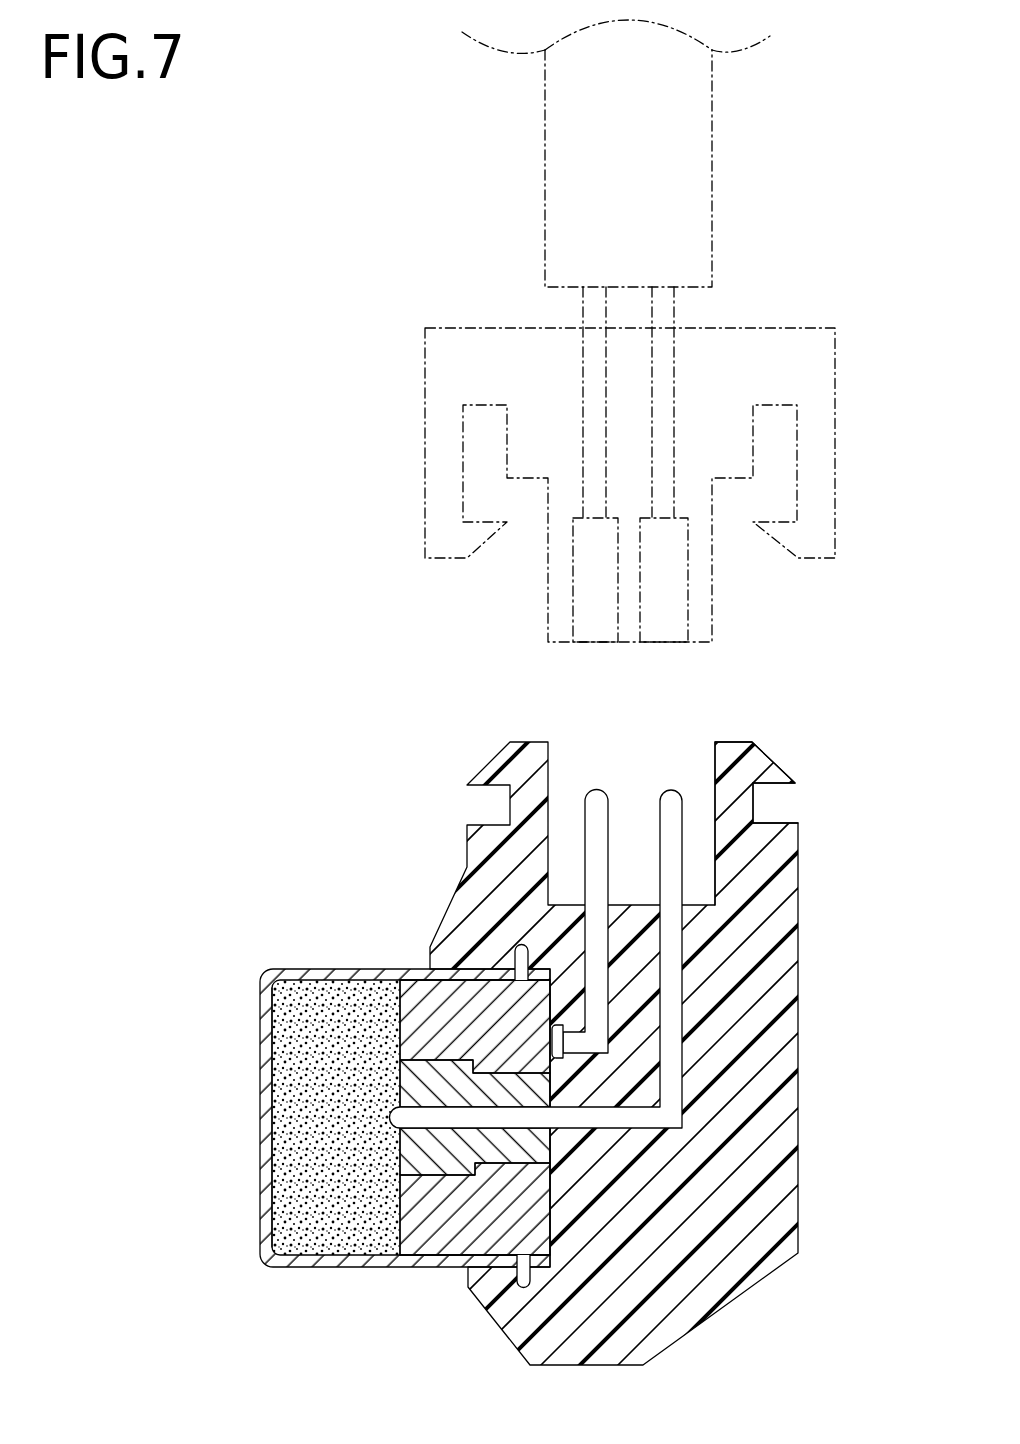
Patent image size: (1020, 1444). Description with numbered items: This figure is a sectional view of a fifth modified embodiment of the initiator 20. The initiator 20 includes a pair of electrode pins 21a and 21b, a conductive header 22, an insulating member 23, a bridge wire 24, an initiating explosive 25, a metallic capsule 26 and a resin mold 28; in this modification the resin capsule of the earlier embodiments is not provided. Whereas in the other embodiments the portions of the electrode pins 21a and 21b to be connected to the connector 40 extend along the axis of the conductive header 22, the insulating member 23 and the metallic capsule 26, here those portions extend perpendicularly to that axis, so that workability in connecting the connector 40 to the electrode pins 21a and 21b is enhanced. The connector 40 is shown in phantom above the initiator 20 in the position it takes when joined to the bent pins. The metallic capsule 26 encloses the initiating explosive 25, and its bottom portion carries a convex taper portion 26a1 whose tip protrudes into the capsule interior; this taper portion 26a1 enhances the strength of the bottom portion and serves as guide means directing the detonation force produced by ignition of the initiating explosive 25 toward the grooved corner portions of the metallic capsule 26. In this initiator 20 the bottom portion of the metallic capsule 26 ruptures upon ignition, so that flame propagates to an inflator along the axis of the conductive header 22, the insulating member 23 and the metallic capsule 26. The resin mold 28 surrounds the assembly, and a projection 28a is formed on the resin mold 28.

The initiator 20 is at (807, 1110).
The electrode pin 21a is at (593, 805).
The electrode pin 21b is at (670, 805).
The conductive header 22 is at (401, 1079).
The insulating member 23 is at (422, 1077).
The bridge wire 24 is at (397, 1150).
The initiating explosive 25 is at (290, 1062).
The metallic capsule 26 is at (272, 970).
The taper portion 26a1 is at (263, 1153).
The resin mold 28 is at (787, 980).
The engaging projection 28a is at (757, 760).
The connector 40 is at (782, 327).